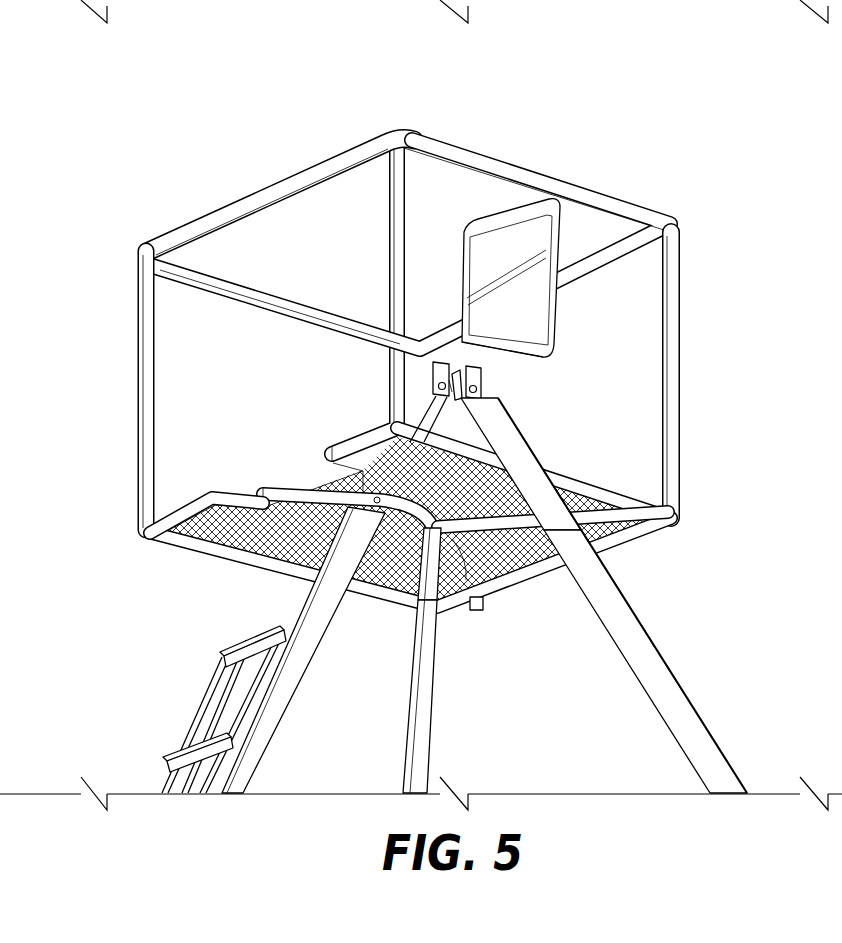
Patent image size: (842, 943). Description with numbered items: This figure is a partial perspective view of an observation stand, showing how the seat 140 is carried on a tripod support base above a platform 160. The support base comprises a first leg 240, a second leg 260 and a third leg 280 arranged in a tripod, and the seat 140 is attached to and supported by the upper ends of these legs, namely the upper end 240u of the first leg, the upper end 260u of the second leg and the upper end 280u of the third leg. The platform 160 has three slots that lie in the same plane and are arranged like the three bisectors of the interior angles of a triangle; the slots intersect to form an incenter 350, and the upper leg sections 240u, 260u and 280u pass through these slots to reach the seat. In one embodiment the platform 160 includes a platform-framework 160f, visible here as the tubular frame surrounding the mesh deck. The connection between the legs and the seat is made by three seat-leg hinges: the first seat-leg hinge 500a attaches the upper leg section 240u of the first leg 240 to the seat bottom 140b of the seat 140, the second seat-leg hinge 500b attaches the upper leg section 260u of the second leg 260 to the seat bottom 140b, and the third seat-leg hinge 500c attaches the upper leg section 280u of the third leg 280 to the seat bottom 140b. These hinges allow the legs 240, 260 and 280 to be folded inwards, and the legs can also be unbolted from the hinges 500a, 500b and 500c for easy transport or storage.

The seat 140 is at (500, 243).
The seat bottom 140b is at (515, 358).
The platform 160 is at (357, 594).
The platform-framework 160f is at (357, 594).
The first leg 240 is at (649, 585).
The upper end of first leg 240u is at (482, 378).
The second leg 260 is at (304, 594).
The upper end of second leg 260u is at (427, 413).
The third leg 280 is at (488, 659).
The upper end of third leg 280u is at (563, 525).
The incenter 350 is at (453, 540).
The first seat-leg hinge 500a is at (495, 419).
The second seat-leg hinge 500b is at (428, 373).
The third seat-leg hinge 500c is at (460, 374).